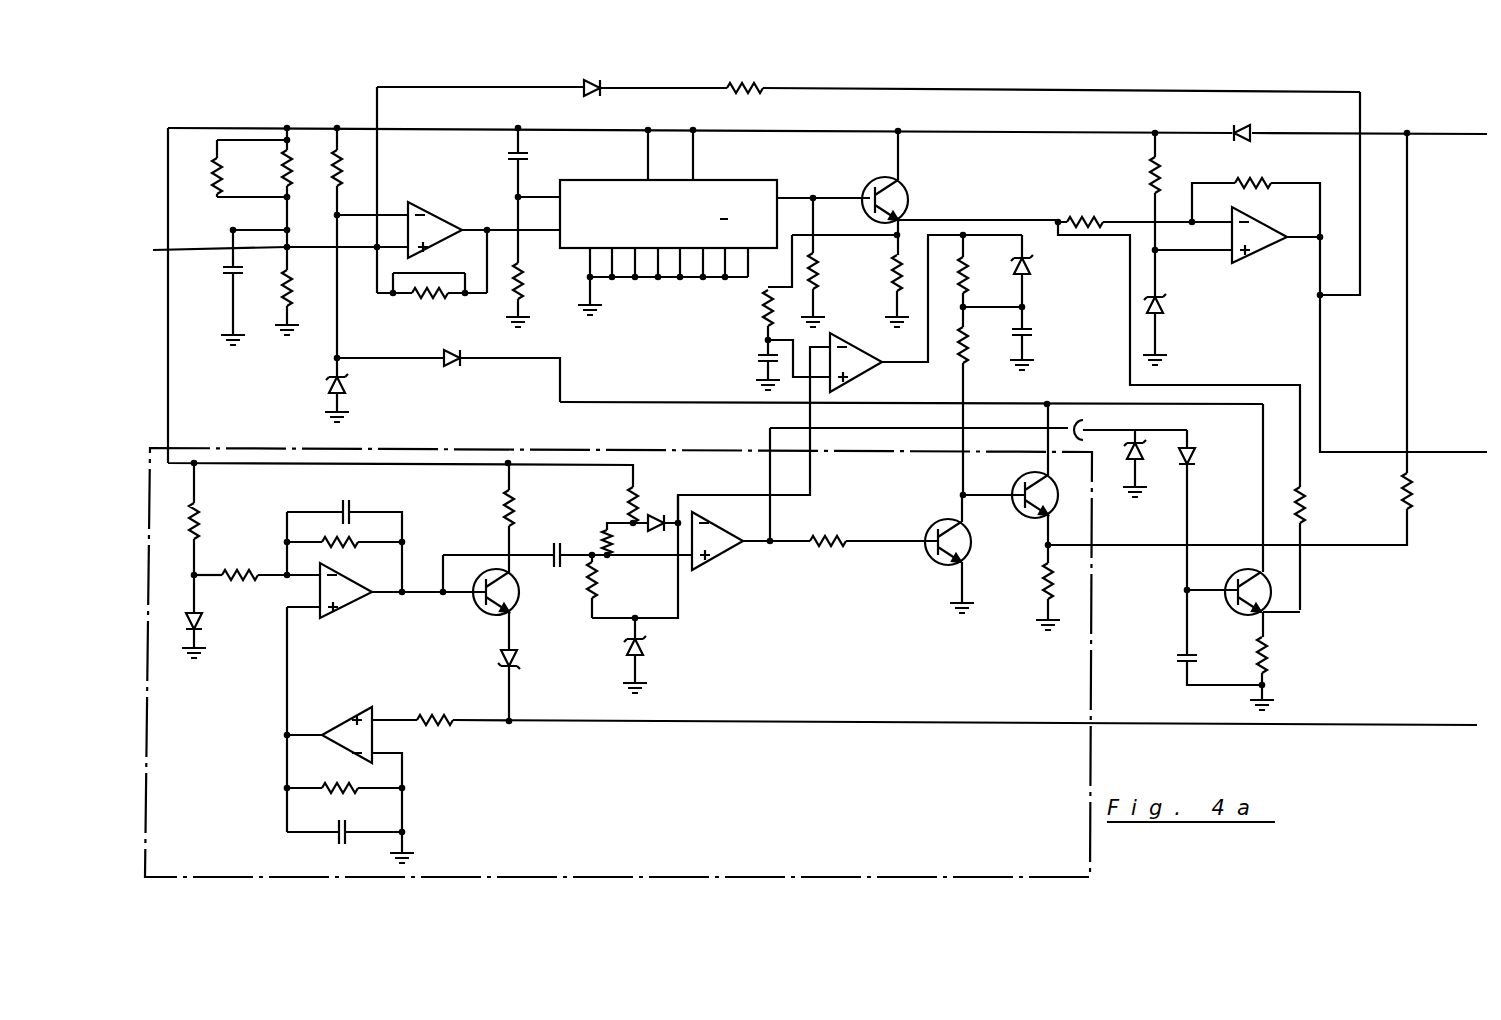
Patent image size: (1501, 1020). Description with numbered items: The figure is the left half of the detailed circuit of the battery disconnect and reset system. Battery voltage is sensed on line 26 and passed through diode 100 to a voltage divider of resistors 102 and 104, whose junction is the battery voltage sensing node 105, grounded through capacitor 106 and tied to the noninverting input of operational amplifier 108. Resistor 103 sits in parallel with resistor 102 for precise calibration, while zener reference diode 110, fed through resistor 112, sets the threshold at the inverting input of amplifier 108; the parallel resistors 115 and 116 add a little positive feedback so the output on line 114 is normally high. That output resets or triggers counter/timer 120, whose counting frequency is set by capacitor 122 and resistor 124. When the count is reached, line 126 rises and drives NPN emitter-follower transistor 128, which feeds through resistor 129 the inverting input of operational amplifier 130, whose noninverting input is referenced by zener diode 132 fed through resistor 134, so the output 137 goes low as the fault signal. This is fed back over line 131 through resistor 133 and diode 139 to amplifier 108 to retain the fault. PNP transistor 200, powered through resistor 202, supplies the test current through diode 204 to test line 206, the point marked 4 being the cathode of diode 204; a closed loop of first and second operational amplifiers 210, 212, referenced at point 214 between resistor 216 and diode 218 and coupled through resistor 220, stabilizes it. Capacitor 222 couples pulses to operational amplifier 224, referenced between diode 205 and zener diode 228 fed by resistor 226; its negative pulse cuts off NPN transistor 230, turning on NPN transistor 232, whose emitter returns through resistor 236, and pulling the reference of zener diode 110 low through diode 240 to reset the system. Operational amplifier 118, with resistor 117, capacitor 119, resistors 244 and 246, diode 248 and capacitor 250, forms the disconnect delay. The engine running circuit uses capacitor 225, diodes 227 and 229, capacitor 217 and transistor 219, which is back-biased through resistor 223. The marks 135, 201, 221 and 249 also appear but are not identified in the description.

The lead 4 is at (510, 723).
The line 26 is at (1457, 133).
The diode 100 is at (1247, 125).
The resistor 102 is at (287, 163).
The resistor 103 is at (215, 177).
The resistor 104 is at (292, 290).
The battery voltage sensing node 105 is at (202, 251).
The capacitor 106 is at (225, 270).
The operational amplifier 108 is at (437, 212).
The zener reference diode 110 is at (330, 383).
The resistor 112 is at (337, 163).
The line 114 is at (488, 228).
The resistor 115 is at (433, 277).
The resistor 116 is at (428, 297).
The resistor 117 is at (765, 310).
The operational amplifier 118 is at (853, 337).
The capacitor 119 is at (760, 358).
The counter/timer 120 is at (605, 180).
The capacitor 122 is at (513, 150).
The resistor 124 is at (522, 275).
The line 126 is at (813, 195).
The NPN emitter-follower transistor 128 is at (906, 185).
The resistor 129 is at (1092, 196).
The operational amplifier 130 is at (1265, 253).
The line 131 is at (1105, 89).
The zener diode 132 is at (1165, 305).
The resistor 133 is at (748, 85).
The resistor 134 is at (1150, 185).
The output line 135 is at (1358, 450).
The output 137 is at (1292, 234).
The diode 139 is at (588, 82).
The PNP transistor 200 is at (517, 607).
The resistor 201 is at (612, 540).
The resistor 202 is at (513, 507).
The diode 204 is at (513, 660).
The diode 205 is at (657, 531).
The test line 206 is at (750, 722).
The first operational amplifier 210 is at (343, 720).
The second operational amplifier 212 is at (345, 612).
The point 214 is at (197, 578).
The resistor 216 is at (197, 515).
The capacitor 217 is at (1180, 660).
The diode 218 is at (198, 622).
The transistor 219 is at (1250, 572).
The resistor 220 is at (235, 572).
The resistor 221 is at (1268, 660).
The capacitor 222 is at (555, 568).
The resistor 223 is at (1305, 505).
The operational amplifier 224 is at (727, 512).
The capacitor 225 is at (1070, 428).
The resistor 226 is at (640, 500).
The diode 227 is at (1195, 458).
The zener diode 228 is at (642, 648).
The diode 229 is at (1127, 455).
The NPN transistor 230 is at (933, 525).
The NPN transistor 232 is at (1022, 516).
The resistor 236 is at (1410, 490).
The diode 240 is at (450, 366).
The resistor 244 is at (961, 265).
The resistor 246 is at (960, 333).
The diode 248 is at (1030, 268).
The resistor 249 is at (890, 275).
The capacitor 250 is at (1030, 333).